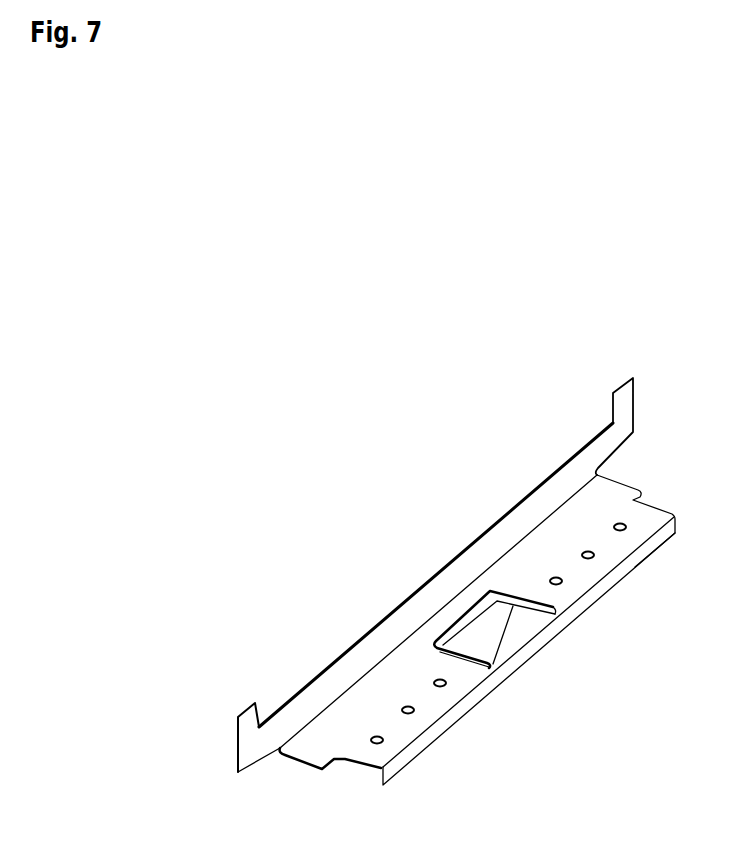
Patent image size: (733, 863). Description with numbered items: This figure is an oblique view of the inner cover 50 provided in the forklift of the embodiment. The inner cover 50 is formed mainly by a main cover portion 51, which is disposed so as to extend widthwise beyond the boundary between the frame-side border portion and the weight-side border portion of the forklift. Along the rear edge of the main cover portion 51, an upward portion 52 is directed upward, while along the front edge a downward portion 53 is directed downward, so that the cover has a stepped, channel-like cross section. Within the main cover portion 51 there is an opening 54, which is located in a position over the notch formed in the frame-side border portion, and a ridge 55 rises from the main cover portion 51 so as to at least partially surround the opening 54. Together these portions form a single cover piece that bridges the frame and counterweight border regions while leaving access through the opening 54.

The inner cover 50 is at (262, 401).
The main cover portion 51 is at (377, 750).
The upward portion 52 is at (304, 710).
The downward portion 53 is at (458, 712).
The opening 54 is at (478, 623).
The ridge 55 is at (477, 662).